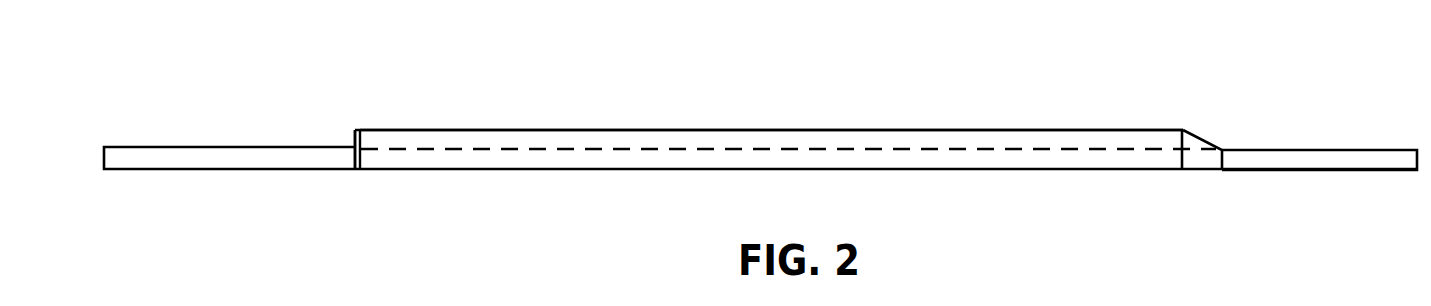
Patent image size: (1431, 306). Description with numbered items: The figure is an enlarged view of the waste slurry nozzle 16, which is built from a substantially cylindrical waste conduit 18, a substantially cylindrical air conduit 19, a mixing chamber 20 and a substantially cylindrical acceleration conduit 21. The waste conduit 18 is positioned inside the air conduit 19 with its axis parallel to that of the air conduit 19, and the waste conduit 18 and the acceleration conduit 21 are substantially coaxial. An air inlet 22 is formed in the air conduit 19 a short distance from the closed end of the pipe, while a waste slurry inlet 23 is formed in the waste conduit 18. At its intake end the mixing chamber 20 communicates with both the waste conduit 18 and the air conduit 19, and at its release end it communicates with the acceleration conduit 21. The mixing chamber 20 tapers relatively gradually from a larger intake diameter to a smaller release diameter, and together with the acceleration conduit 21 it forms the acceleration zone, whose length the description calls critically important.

The waste slurry nozzle 16 is at (769, 112).
The waste conduit 18 is at (1020, 158).
The air conduit 19 is at (928, 135).
The mixing chamber 20 is at (1202, 147).
The acceleration conduit 21 is at (1328, 157).
The air inlet 22 is at (354, 138).
The waste slurry inlet 23 is at (103, 154).